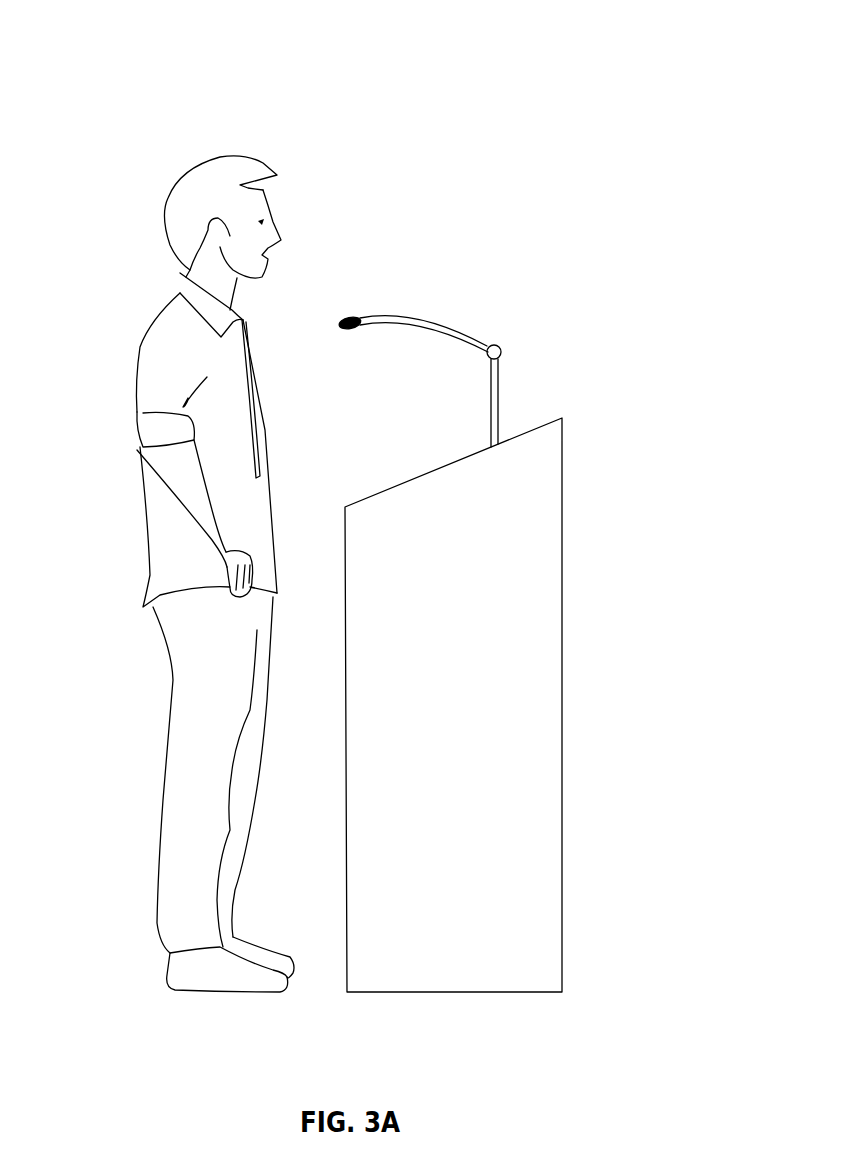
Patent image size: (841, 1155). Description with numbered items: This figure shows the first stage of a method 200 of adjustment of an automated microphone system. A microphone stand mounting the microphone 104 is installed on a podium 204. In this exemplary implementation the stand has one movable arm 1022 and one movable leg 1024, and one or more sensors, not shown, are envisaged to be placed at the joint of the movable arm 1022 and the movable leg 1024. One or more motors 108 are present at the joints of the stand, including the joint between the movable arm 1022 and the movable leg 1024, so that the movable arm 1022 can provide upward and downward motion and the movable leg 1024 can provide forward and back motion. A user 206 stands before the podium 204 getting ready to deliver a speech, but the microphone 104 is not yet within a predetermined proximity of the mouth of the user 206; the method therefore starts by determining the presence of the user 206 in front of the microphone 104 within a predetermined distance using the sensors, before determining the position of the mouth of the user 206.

The method of adjustment 200 is at (165, 98).
The user 206 is at (166, 320).
The podium 204 is at (543, 667).
The microphone 104 is at (343, 330).
The movable arm 1022 is at (408, 317).
The one or more motors 108 is at (502, 348).
The movable leg 1024 is at (498, 400).